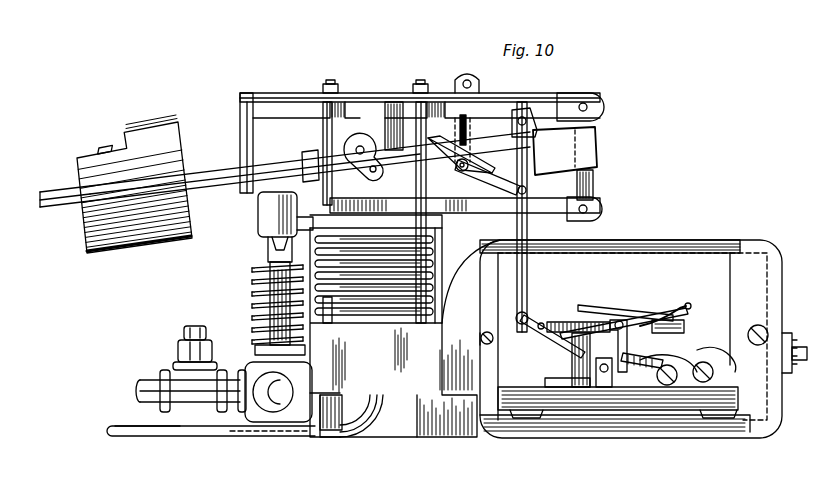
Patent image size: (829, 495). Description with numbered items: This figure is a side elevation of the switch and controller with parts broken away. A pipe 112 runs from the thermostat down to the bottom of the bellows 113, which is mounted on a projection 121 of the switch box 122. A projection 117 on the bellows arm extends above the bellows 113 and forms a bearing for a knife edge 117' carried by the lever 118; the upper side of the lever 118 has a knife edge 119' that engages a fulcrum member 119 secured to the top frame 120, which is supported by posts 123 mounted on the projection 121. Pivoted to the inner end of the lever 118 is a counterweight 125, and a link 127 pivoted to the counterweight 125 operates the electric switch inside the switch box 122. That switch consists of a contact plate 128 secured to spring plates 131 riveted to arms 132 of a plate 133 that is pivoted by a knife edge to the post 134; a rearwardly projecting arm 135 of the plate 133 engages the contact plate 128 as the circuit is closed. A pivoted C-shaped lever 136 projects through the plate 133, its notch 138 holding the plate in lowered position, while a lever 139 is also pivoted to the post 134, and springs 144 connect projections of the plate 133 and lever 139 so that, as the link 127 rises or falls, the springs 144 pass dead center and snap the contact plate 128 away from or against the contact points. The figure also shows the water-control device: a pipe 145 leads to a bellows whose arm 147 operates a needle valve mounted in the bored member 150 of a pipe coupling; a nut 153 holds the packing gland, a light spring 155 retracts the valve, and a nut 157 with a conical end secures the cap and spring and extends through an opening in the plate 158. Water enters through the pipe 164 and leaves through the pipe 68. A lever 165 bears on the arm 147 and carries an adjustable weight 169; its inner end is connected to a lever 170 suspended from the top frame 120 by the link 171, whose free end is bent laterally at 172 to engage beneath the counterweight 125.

The pipe 68 is at (140, 385).
The pipe 112 is at (112, 430).
The bellows 113 is at (387, 290).
The projection 117 is at (378, 167).
The knife edge 117' is at (374, 91).
The lever 118 is at (237, 178).
The fulcrum member 119 is at (401, 74).
The knife edge 119' is at (401, 93).
The top frame 120 is at (289, 101).
The projection 121 is at (343, 380).
The switch box 122 is at (688, 240).
The posts 123 is at (324, 134).
The counterweight 125 is at (591, 146).
The link 127 is at (527, 263).
The contact plate 128 is at (684, 322).
The spring plates 131 is at (627, 322).
The arms 132 is at (600, 307).
The plate 133 is at (628, 355).
The post 134 is at (572, 366).
The arm 135 is at (680, 300).
The C-shaped lever 136 is at (608, 365).
The notch 138 is at (660, 362).
The lever 139 is at (560, 338).
The springs 144 is at (569, 322).
The pipe 145 is at (118, 437).
The arm 147 is at (440, 204).
The internally bored member 150 is at (262, 345).
The nut 153 is at (255, 306).
The spring 155 is at (262, 297).
The nut 157 is at (268, 253).
The plate 158 is at (259, 238).
The pipe 164 is at (200, 393).
The lever 165 is at (57, 207).
The adjustable weight 169 is at (134, 184).
The lever 170 is at (493, 183).
The link 171 is at (467, 118).
The laterally bent end 172 is at (512, 192).